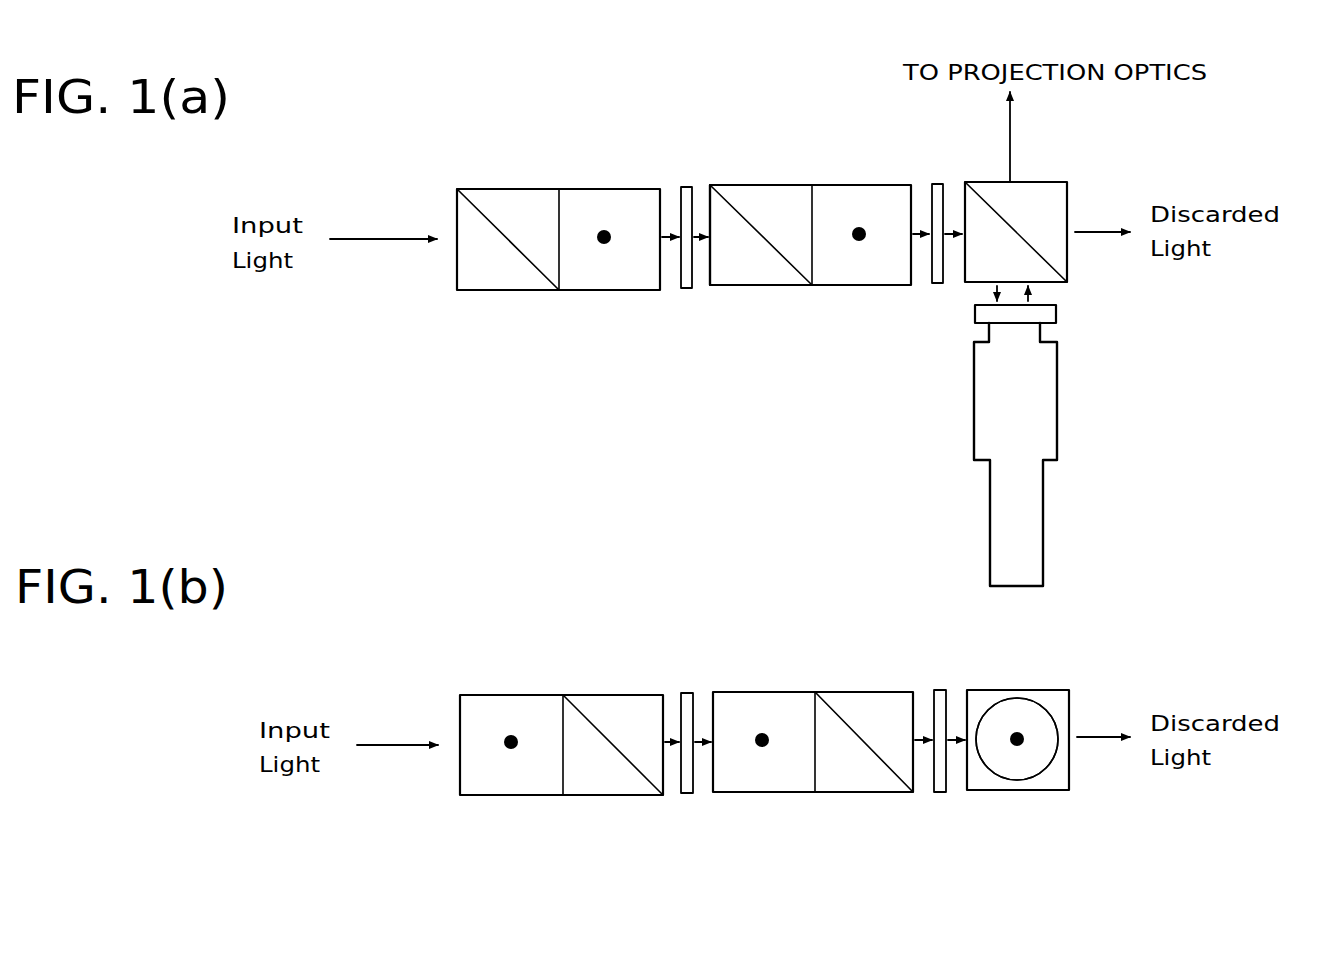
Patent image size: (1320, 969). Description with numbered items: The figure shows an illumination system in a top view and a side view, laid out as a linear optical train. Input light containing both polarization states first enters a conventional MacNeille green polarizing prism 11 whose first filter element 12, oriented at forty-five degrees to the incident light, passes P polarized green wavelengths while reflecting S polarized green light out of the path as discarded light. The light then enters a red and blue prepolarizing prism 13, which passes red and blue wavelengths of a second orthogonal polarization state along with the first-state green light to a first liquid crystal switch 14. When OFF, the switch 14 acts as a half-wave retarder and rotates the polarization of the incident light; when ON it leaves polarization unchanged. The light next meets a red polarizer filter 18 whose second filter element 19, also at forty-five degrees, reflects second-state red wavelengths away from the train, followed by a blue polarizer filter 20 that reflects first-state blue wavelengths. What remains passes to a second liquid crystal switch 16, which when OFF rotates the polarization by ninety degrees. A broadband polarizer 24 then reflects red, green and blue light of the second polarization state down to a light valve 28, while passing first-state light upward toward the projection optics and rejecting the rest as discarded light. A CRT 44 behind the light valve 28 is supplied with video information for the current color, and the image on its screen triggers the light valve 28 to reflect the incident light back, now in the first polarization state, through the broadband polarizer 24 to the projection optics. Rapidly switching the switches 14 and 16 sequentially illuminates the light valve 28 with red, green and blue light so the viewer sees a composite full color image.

In FIG. 1A, the green polarizing prism 11 is at (475, 189).
In FIG. 1B, the green polarizing prism 11 is at (485, 695).
In FIG. 1A, the first filter element 12 is at (497, 232).
In FIG. 1B, the first filter element 12 is at (511, 750).
In FIG. 1A, the red and blue prepolarizing prism 13 is at (611, 268).
In FIG. 1B, the red and blue prepolarizing prism 13 is at (611, 781).
In FIG. 1A, the first liquid crystal switch 14 is at (688, 288).
In FIG. 1B, the first liquid crystal switch 14 is at (688, 693).
In FIG. 1A, the second liquid crystal switch 16 is at (938, 284).
In FIG. 1B, the second liquid crystal switch 16 is at (940, 792).
In FIG. 1A, the red polarizer filter 18 is at (752, 270).
In FIG. 1B, the red polarizer filter 18 is at (768, 780).
In FIG. 1A, the second filter element 19 is at (738, 211).
In FIG. 1A, the blue polarizer filter 20 is at (866, 272).
In FIG. 1B, the blue polarizer filter 20 is at (861, 780).
In FIG. 1A, the broadband polarizer 24 is at (1049, 215).
In FIG. 1B, the broadband polarizer 24 is at (1058, 706).
In FIG. 1A, the light valve 28 is at (1050, 316).
In FIG. 1B, the light valve 28 is at (1045, 768).
In FIG. 1A, the CRT 44 is at (1046, 444).
In FIG. 1B, the CRT 44 is at (1017, 739).